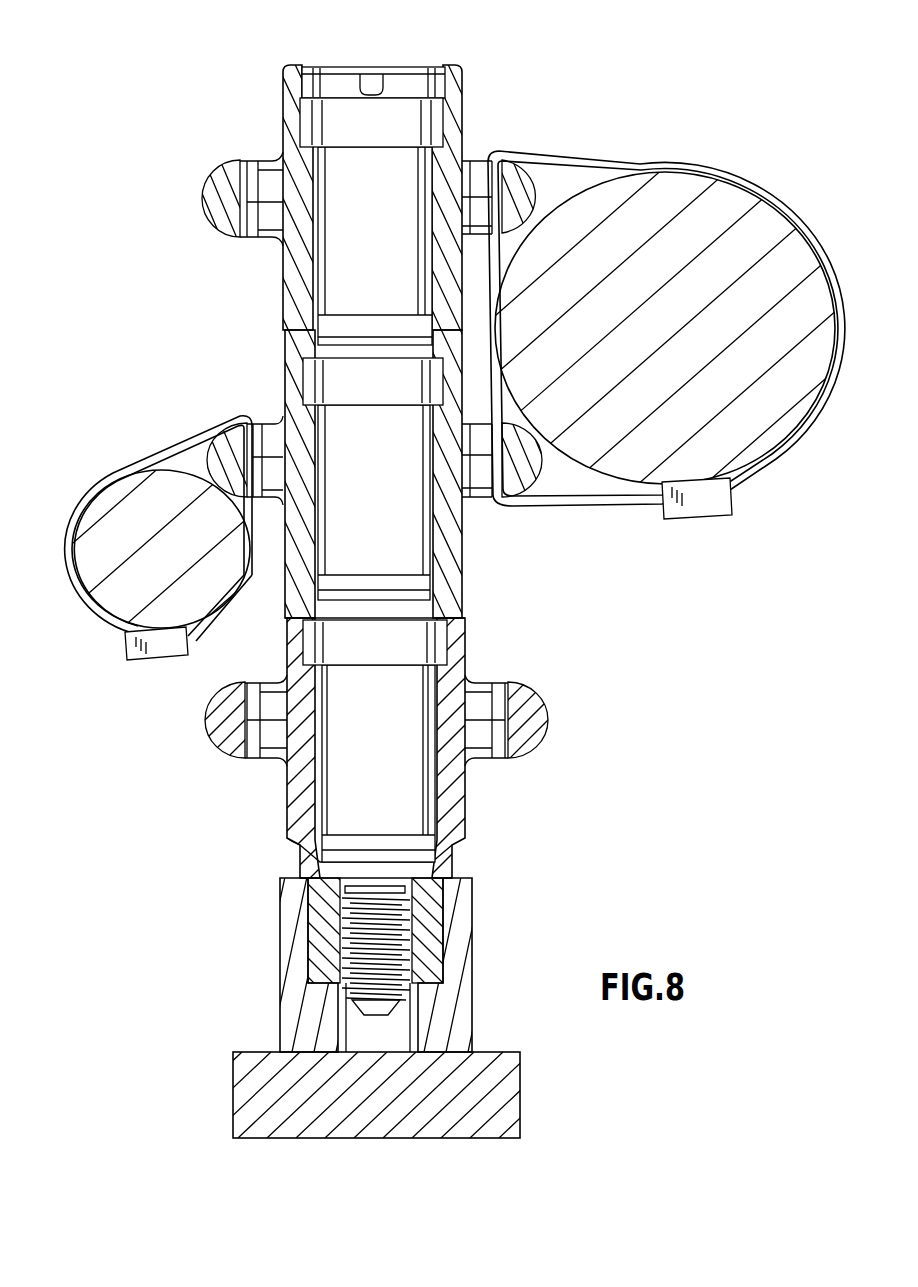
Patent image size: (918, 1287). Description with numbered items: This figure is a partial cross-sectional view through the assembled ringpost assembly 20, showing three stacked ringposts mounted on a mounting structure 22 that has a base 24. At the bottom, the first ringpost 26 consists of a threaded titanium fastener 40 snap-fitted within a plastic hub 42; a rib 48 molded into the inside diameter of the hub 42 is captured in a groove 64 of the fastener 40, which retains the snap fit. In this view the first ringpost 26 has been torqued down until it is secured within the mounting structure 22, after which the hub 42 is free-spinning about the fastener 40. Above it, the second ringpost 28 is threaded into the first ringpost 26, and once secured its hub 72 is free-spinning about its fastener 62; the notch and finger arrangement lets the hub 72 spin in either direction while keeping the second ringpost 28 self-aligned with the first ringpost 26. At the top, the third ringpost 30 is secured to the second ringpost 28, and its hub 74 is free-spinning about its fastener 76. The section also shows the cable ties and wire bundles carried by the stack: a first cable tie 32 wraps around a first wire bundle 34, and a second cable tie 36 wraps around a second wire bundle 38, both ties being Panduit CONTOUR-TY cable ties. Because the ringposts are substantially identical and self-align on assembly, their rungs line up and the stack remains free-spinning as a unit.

The ringpost assembly 20 is at (186, 325).
The mounting structure 22 is at (247, 1047).
The base 24 is at (280, 917).
The first ringpost 26 is at (537, 690).
The second ringpost 28 is at (483, 497).
The third ringpost 30 is at (265, 162).
The first cable tie 32 is at (178, 440).
The first wire bundle 34 is at (137, 503).
The second cable tie 36 is at (588, 157).
The second wire bundle 38 is at (718, 208).
The fastener 40 is at (418, 790).
The hub 42 is at (218, 703).
The rib 48 is at (313, 857).
The fastener 62 is at (410, 543).
The groove 64 is at (313, 843).
The hub 72 is at (268, 435).
The hub 74 is at (222, 182).
The fastener 76 is at (343, 272).